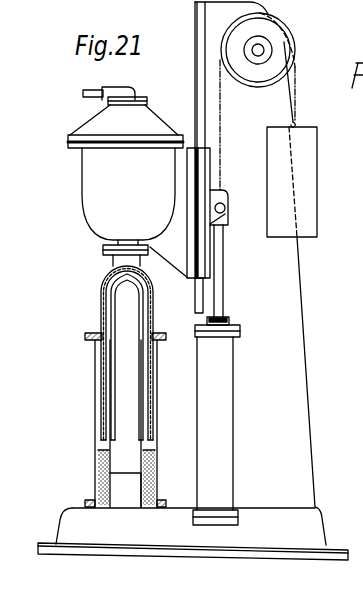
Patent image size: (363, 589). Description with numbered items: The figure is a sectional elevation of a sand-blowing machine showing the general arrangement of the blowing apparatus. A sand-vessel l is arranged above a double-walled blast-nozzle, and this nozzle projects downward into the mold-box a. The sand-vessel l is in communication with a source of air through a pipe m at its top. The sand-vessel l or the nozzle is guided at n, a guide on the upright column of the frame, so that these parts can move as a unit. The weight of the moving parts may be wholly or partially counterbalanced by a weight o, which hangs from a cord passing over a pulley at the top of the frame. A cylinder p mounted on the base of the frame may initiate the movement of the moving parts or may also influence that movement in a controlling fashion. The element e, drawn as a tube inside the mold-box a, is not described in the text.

The pipe m is at (99, 91).
The sand-vessel l is at (98, 216).
The guide n is at (205, 172).
The weight o is at (315, 205).
The U-shaped tube e is at (102, 302).
The cylinder p is at (230, 405).
The mold-box a is at (98, 462).